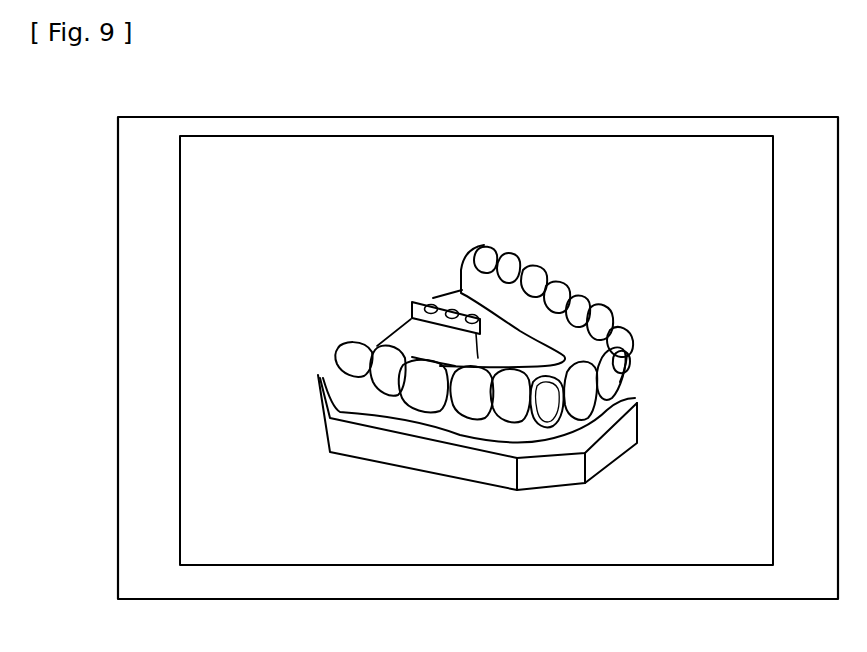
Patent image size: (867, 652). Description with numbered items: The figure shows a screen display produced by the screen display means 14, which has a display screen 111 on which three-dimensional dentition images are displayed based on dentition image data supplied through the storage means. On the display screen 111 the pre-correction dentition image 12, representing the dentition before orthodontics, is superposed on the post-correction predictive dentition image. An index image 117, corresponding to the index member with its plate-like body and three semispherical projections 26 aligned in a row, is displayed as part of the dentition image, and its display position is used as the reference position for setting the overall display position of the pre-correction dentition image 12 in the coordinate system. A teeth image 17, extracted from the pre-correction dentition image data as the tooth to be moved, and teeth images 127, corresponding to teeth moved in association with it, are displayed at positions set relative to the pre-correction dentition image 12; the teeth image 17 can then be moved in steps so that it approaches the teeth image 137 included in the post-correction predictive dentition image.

The screen display means 14 is at (117, 198).
The display screen 111 is at (131, 330).
The pre-correction dentition image 12 is at (333, 361).
The index image 117 is at (401, 301).
The semispherical projections 26 is at (430, 302).
The teeth image 17 is at (547, 427).
The teeth images 127 is at (507, 413).
The teeth image 137 is at (616, 374).